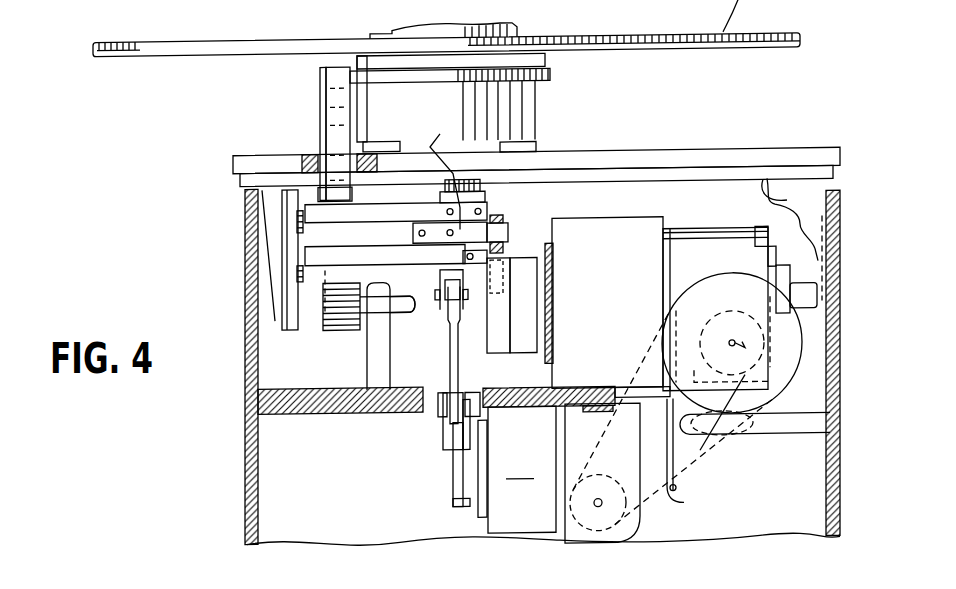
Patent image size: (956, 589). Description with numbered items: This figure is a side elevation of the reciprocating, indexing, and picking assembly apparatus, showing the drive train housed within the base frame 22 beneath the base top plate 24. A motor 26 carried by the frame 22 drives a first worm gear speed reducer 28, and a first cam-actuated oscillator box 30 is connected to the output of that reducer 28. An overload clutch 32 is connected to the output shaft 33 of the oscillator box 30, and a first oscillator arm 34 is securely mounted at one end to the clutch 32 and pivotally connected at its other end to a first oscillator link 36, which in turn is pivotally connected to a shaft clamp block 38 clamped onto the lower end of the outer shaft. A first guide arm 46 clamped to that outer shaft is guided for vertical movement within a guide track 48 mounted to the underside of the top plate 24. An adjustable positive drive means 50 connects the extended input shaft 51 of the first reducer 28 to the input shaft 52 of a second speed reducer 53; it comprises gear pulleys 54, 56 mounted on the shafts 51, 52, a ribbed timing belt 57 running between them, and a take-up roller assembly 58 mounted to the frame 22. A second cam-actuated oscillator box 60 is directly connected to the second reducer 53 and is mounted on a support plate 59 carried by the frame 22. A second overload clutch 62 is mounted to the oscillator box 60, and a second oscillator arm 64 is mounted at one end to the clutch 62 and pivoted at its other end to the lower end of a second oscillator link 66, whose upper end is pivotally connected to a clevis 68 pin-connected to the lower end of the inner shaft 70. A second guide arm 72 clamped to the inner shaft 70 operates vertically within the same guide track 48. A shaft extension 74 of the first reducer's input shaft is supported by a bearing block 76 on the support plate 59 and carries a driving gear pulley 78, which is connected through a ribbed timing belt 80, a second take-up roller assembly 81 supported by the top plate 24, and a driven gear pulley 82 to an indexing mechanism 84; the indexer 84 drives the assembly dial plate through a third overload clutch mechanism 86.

The base frame 22 is at (245, 212).
The base top plate 24 is at (828, 158).
The motor 26 is at (805, 349).
The first worm gear speed reducer 28 is at (822, 243).
The first cam-actuated oscillator box 30 is at (640, 226).
The overload clutch 32 is at (523, 265).
The output shaft 33 is at (553, 278).
The first oscillator arm 34 is at (491, 362).
The first oscillator link 36 is at (495, 223).
The shaft clamp block 38 is at (457, 171).
The first guide arm 46 is at (316, 220).
The guide track 48 is at (318, 266).
The adjustable positive drive means 50 is at (698, 481).
The extended input shaft 51 is at (840, 368).
The input shaft 52 is at (578, 511).
The second speed reducer 53 is at (633, 534).
The gear pulley 54 is at (724, 322).
The gear pulley 56 is at (643, 529).
The ribbed timing belt 57 is at (676, 497).
The take-up roller assembly 58 is at (748, 441).
The support plate 59 is at (505, 416).
The second cam-actuated oscillator box 60 is at (520, 469).
The second overload clutch 62 is at (462, 509).
The second oscillator arm 64 is at (453, 480).
The second oscillator link 66 is at (445, 418).
The clevis 68 is at (443, 276).
The inner shaft 70 is at (433, 279).
The second guide arm 72 is at (317, 294).
The shaft extension 74 is at (390, 355).
The bearing block 76 is at (367, 385).
The driving gear pulley 78 is at (323, 332).
The ribbed timing belt 80 is at (336, 96).
The second take-up roller assembly 81 is at (320, 199).
The driven gear pulley 82 is at (318, 74).
The indexing mechanism 84 is at (525, 108).
The third overload clutch mechanism 86 is at (515, 31).